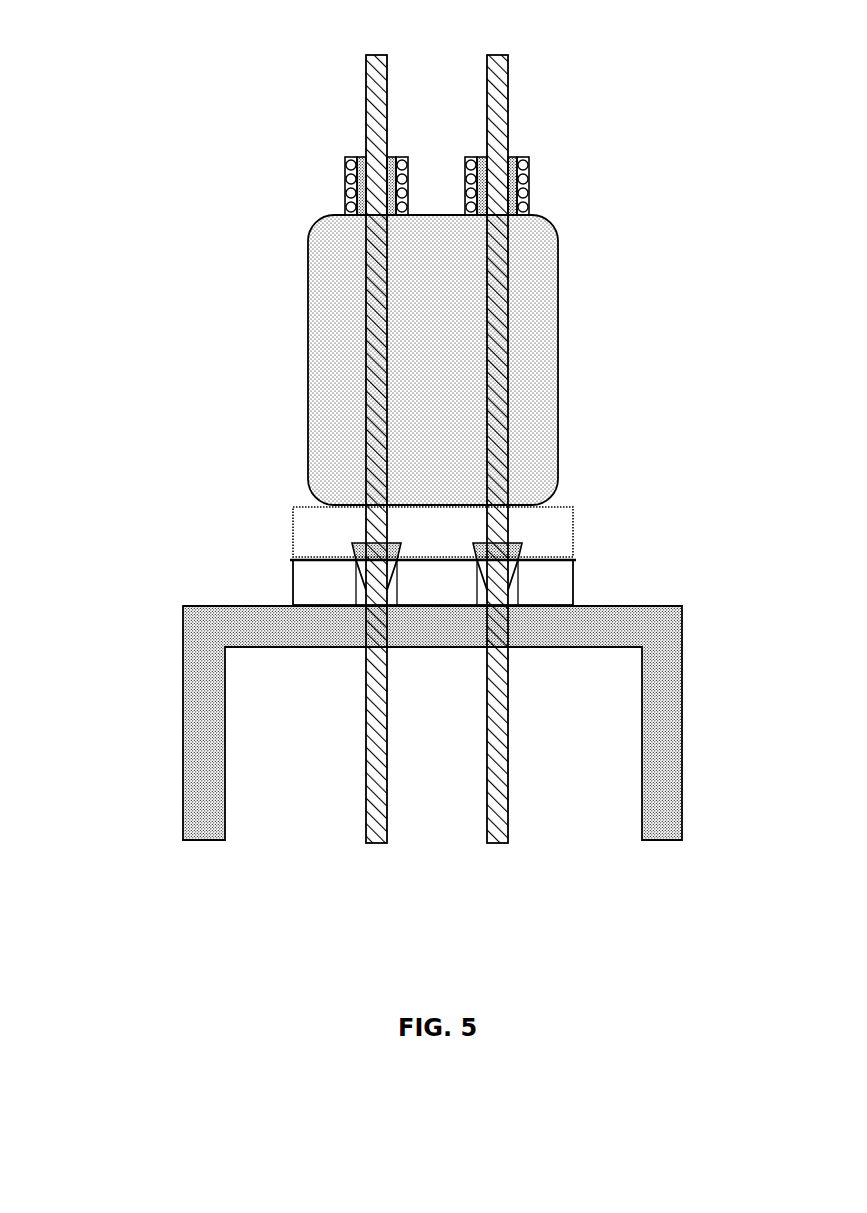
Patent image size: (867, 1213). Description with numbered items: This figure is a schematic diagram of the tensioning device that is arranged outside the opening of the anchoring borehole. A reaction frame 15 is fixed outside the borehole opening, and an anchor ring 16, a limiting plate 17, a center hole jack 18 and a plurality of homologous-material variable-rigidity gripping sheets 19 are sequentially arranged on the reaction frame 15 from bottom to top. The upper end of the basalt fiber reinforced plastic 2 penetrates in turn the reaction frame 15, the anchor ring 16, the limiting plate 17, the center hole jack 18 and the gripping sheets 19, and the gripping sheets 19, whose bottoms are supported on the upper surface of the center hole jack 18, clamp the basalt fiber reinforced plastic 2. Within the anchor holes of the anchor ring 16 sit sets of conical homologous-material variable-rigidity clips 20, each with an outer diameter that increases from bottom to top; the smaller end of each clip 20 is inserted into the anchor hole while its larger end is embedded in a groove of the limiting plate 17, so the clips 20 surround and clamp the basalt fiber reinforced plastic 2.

The basalt fiber reinforced plastic 2 is at (382, 185).
The reaction frame 15 is at (210, 762).
The anchor ring 16 is at (560, 583).
The limiting plate 17 is at (537, 520).
The center hole jack 18 is at (523, 422).
The homologous-material variable-rigidity gripping sheet 19 is at (515, 207).
The homologous-material variable-rigidity clip 20 is at (355, 547).